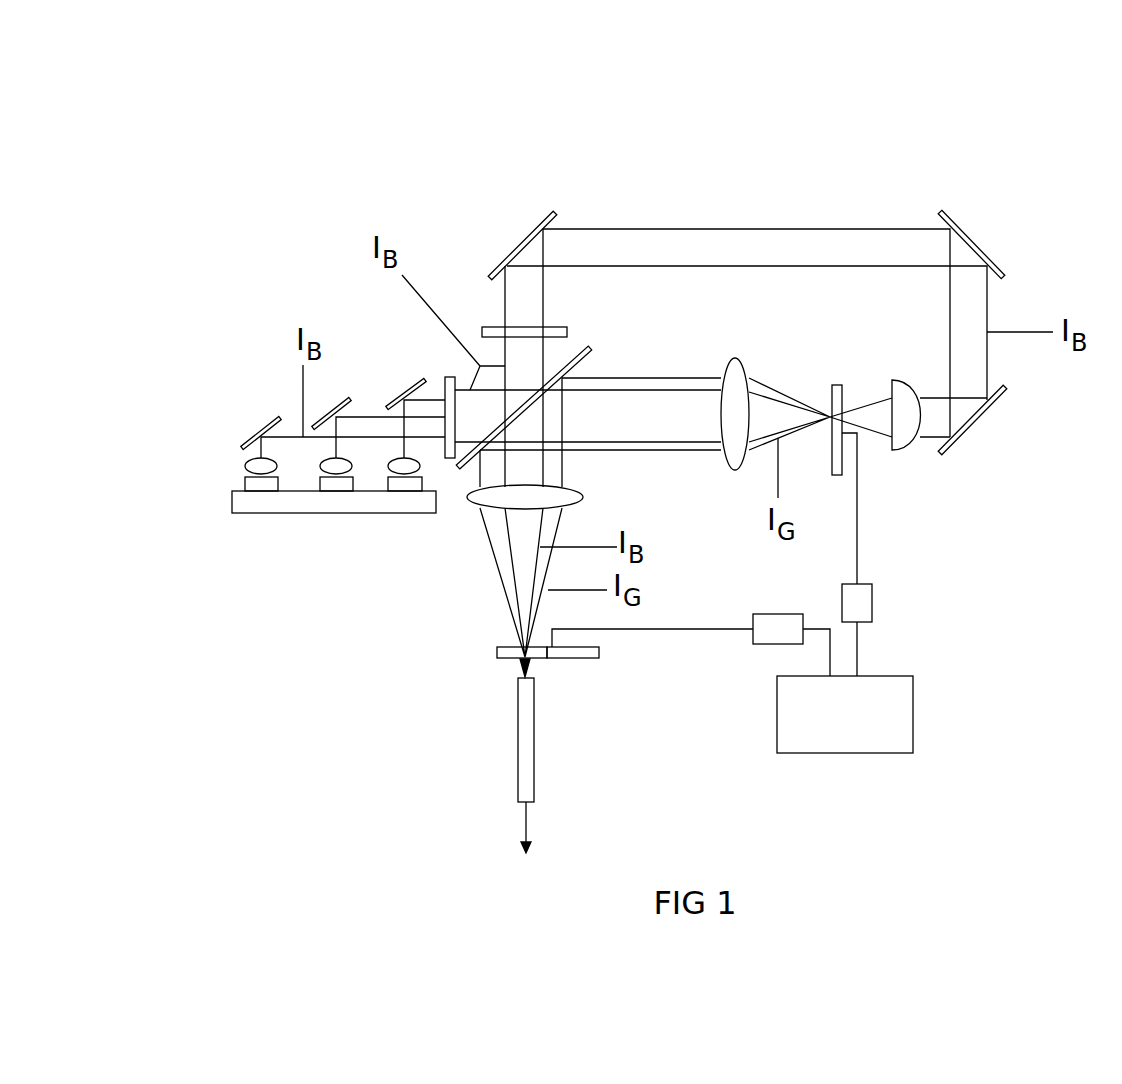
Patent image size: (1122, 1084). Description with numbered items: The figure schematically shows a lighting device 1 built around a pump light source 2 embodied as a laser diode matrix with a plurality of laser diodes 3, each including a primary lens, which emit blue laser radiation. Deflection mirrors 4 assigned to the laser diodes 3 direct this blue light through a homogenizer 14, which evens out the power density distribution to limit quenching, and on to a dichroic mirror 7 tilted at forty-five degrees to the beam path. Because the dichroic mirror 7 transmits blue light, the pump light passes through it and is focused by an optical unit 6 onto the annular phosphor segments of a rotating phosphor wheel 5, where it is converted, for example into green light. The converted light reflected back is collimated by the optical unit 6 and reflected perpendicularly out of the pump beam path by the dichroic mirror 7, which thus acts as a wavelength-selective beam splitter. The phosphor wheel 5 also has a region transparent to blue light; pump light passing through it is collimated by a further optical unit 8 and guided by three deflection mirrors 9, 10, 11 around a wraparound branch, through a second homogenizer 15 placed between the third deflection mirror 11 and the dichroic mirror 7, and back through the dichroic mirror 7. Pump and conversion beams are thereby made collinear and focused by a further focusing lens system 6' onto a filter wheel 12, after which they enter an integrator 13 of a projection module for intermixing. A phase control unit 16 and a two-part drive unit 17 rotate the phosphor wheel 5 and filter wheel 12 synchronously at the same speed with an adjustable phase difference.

The lighting device 1 is at (840, 164).
The pump light source 2 is at (326, 531).
The laser diodes 3 is at (226, 465).
The deflection mirrors 4 is at (423, 383).
The phosphor wheel 5 is at (835, 385).
The optical unit 6 is at (735, 372).
The further focusing lens system 6' is at (575, 497).
The dichroic mirror 7 is at (593, 353).
The further optical unit 8 is at (902, 450).
The deflection mirror 9 is at (980, 418).
The deflection mirror 10 is at (977, 242).
The third deflection mirror 11 is at (523, 242).
The filter wheel 12 is at (497, 652).
The integrator 13 is at (534, 783).
The homogenizer 14 is at (443, 382).
The second homogenizer 15 is at (482, 332).
The phase control unit 16 is at (849, 742).
The two-part drive unit 17 is at (780, 633).